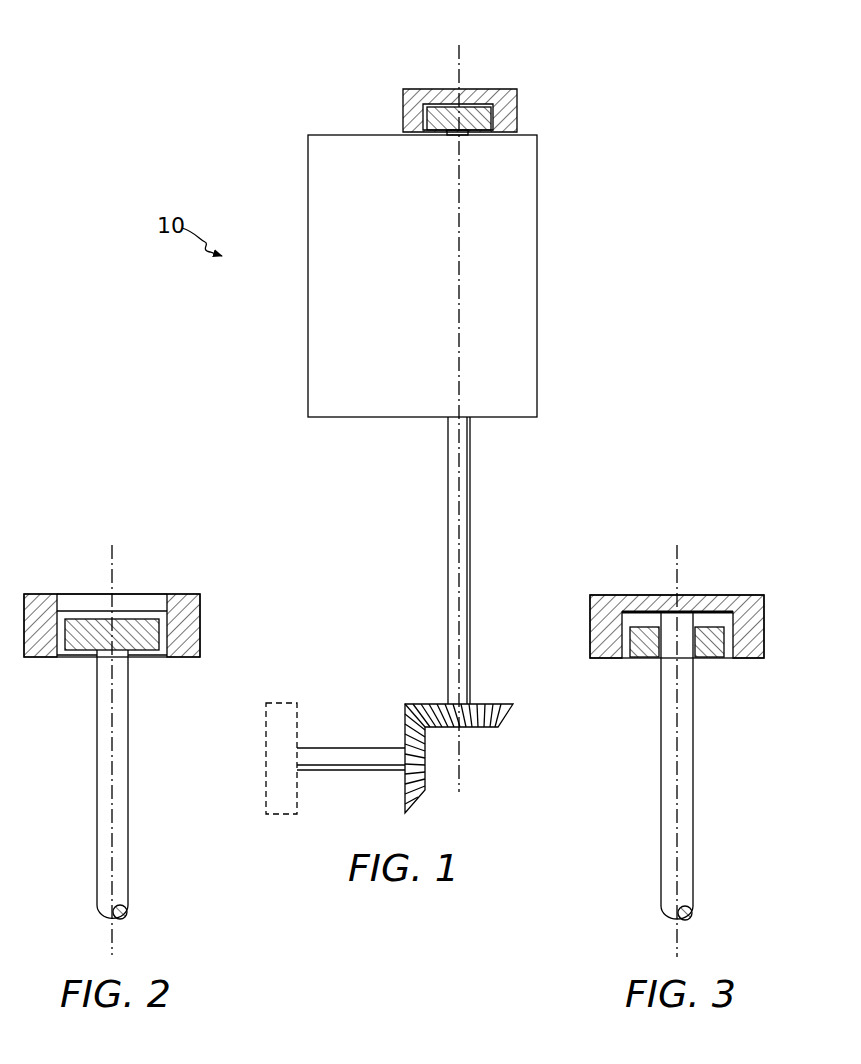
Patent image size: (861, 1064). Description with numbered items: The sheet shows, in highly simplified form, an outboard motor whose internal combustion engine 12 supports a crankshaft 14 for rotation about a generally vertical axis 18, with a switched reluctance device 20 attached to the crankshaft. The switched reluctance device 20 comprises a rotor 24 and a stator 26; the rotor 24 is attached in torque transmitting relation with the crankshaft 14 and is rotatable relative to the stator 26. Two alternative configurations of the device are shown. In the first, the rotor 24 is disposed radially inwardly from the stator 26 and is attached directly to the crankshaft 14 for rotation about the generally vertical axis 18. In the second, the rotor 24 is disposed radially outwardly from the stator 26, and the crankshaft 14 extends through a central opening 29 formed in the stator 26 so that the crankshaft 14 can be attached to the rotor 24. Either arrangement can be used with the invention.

In FIG. 1, the internal combustion engine 12 is at (308, 185).
In FIG. 1, the crankshaft 14 is at (462, 136).
In FIG. 2, the crankshaft 14 is at (128, 720).
In FIG. 3, the crankshaft 14 is at (691, 720).
In FIG. 1, the generally vertical axis 18 is at (459, 64).
In FIG. 2, the generally vertical axis 18 is at (112, 560).
In FIG. 3, the generally vertical axis 18 is at (677, 560).
In FIG. 1, the switched reluctance device 20 is at (582, 72).
In FIG. 2, the switched reluctance device 20 is at (140, 575).
In FIG. 3, the switched reluctance device 20 is at (750, 570).
In FIG. 1, the rotor 24 is at (442, 133).
In FIG. 2, the rotor 24 is at (83, 648).
In FIG. 3, the rotor 24 is at (703, 595).
In FIG. 1, the stator 26 is at (420, 90).
In FIG. 2, the stator 26 is at (100, 594).
In FIG. 3, the stator 26 is at (710, 660).
In FIG. 3, the central opening 29 is at (668, 652).